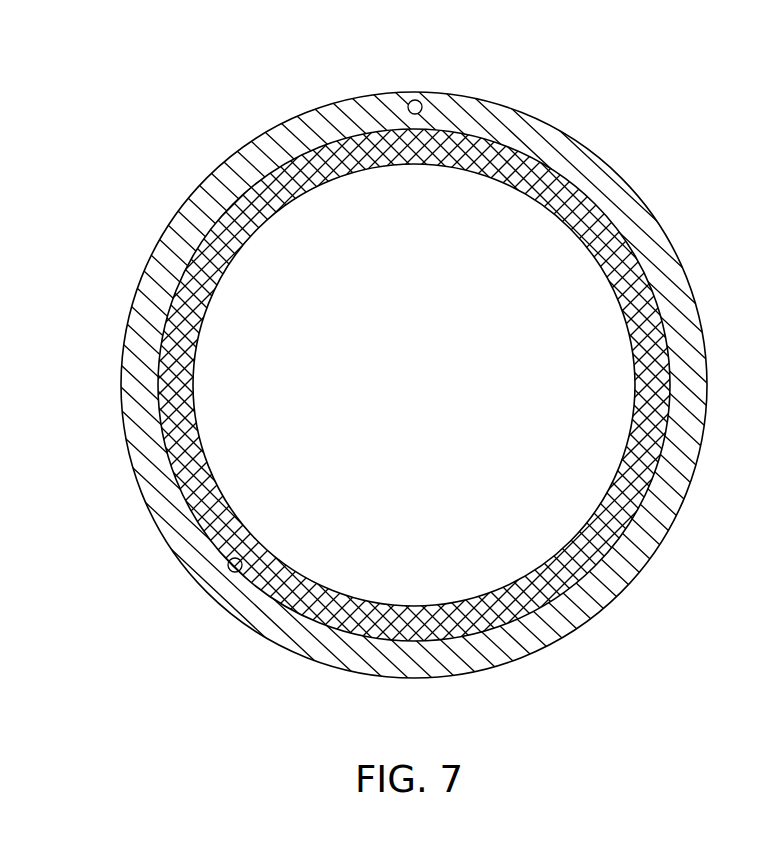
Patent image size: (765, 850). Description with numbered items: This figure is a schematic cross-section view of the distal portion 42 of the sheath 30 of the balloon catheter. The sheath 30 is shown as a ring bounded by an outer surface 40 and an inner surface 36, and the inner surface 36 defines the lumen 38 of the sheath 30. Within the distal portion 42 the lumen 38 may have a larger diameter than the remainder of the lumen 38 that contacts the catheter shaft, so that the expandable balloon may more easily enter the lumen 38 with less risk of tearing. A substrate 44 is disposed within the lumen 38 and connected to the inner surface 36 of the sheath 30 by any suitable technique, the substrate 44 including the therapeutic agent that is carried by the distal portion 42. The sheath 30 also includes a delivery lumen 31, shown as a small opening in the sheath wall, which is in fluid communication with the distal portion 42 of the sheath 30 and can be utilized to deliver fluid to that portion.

The sheath 30 is at (612, 124).
The delivery lumen 31 is at (410, 100).
The inner surface 36 is at (234, 572).
The lumen 38 is at (426, 396).
The outer surface 40 is at (124, 435).
The distal portion 42 is at (109, 297).
The substrate 44 is at (348, 147).